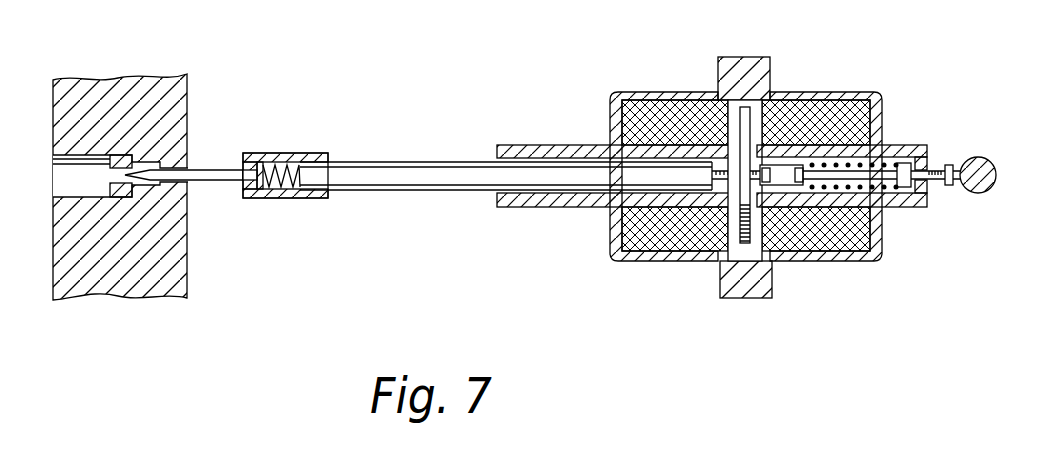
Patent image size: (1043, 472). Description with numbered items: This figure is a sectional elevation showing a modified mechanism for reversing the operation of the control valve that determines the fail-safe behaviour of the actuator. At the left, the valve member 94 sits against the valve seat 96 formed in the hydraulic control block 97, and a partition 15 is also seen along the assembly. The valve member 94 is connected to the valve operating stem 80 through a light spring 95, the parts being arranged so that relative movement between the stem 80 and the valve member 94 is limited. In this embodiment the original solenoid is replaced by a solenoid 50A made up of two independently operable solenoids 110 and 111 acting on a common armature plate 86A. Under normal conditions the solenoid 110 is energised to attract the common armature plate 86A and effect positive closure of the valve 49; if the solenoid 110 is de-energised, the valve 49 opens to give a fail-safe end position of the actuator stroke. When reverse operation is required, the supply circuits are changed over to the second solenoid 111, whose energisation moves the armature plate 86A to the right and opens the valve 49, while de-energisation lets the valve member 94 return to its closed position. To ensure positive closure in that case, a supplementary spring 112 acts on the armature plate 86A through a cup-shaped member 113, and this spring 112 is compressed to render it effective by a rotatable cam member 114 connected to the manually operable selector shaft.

The partition 15 is at (563, 201).
The second control valve 49 is at (157, 162).
The solenoid 50A is at (691, 78).
The valve operating stem 80 is at (438, 178).
The common armature plate 86A is at (746, 262).
The valve member 94 is at (220, 178).
The light spring 95 is at (292, 198).
The valve seat 96 is at (120, 177).
The hydraulic control block 97 is at (140, 292).
The solenoid 110 is at (683, 263).
The second solenoid 111 is at (857, 253).
The supplementary spring 112 is at (893, 192).
The cup-shaped member 113 is at (800, 250).
The rotatable cam member 114 is at (987, 193).